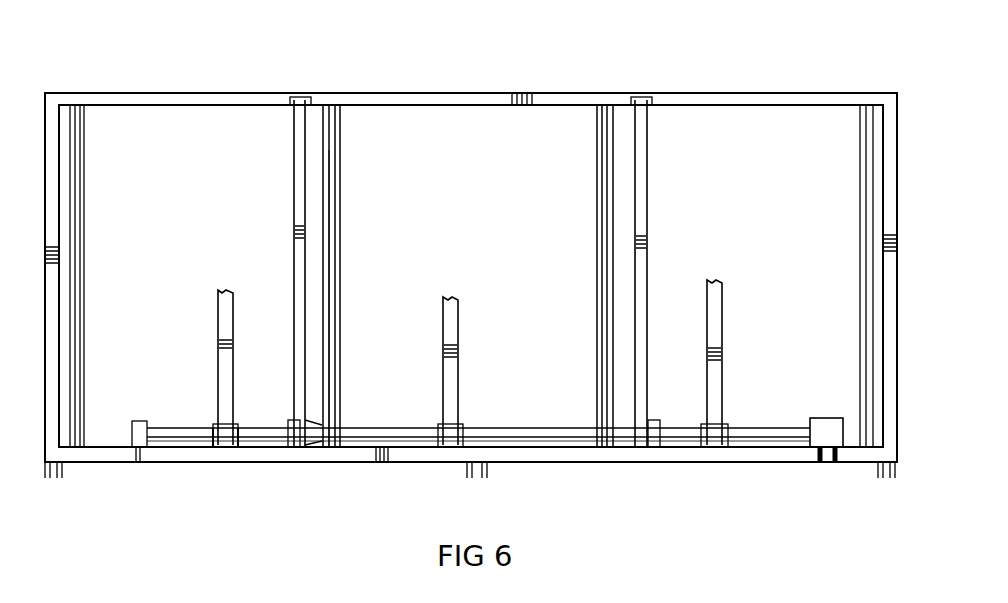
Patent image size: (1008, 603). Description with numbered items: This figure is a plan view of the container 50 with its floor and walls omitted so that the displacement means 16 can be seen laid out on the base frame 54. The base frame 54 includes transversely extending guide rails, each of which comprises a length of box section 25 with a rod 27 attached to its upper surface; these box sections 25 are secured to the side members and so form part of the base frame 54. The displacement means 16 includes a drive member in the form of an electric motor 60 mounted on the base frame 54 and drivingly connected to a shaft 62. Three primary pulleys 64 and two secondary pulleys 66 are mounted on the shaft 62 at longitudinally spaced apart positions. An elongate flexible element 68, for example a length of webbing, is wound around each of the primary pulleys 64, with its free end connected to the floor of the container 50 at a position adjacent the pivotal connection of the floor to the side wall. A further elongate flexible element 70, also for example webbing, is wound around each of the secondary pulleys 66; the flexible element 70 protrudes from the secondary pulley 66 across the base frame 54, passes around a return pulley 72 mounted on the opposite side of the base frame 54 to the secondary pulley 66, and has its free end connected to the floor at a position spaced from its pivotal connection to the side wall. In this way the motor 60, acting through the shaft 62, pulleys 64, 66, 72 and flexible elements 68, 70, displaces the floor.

The displacement means 16 is at (760, 490).
The box section 25 is at (333, 300).
The rod 27 is at (330, 197).
The container 50 is at (370, 35).
The base frame 54 is at (770, 100).
The electric motor 60 is at (830, 430).
The shaft 62 is at (762, 437).
The primary pulleys 64 is at (215, 428).
The secondary pulleys 66 is at (305, 425).
The elongate flexible element 68 is at (222, 313).
The elongate flexible element 70 is at (300, 200).
The return pulley 72 is at (296, 105).